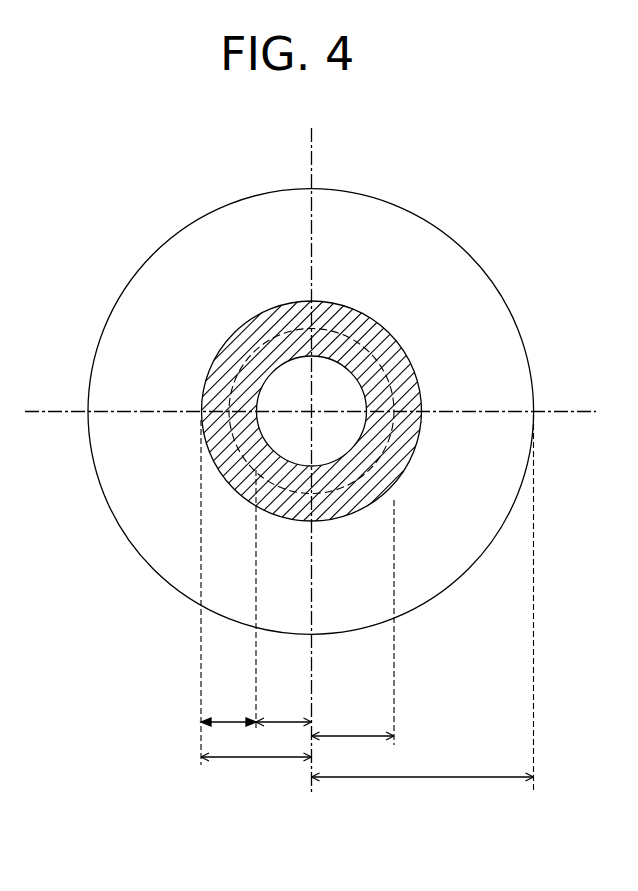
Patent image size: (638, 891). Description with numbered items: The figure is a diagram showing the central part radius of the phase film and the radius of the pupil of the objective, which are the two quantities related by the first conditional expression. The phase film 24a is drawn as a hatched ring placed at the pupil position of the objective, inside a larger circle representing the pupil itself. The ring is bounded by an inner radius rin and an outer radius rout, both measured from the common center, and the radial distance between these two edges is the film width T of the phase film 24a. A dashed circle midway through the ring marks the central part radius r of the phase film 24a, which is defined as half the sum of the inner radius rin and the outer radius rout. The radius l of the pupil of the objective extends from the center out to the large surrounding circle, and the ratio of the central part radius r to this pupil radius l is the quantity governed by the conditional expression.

The phase film 24a is at (214, 366).
The film width of the phase film T is at (228, 711).
The inner radius of the phase film rin is at (284, 710).
The central part radius of the phase film r is at (353, 726).
The outer radius of the phase film rout is at (256, 746).
The radius of a pupil of the objective l is at (423, 766).